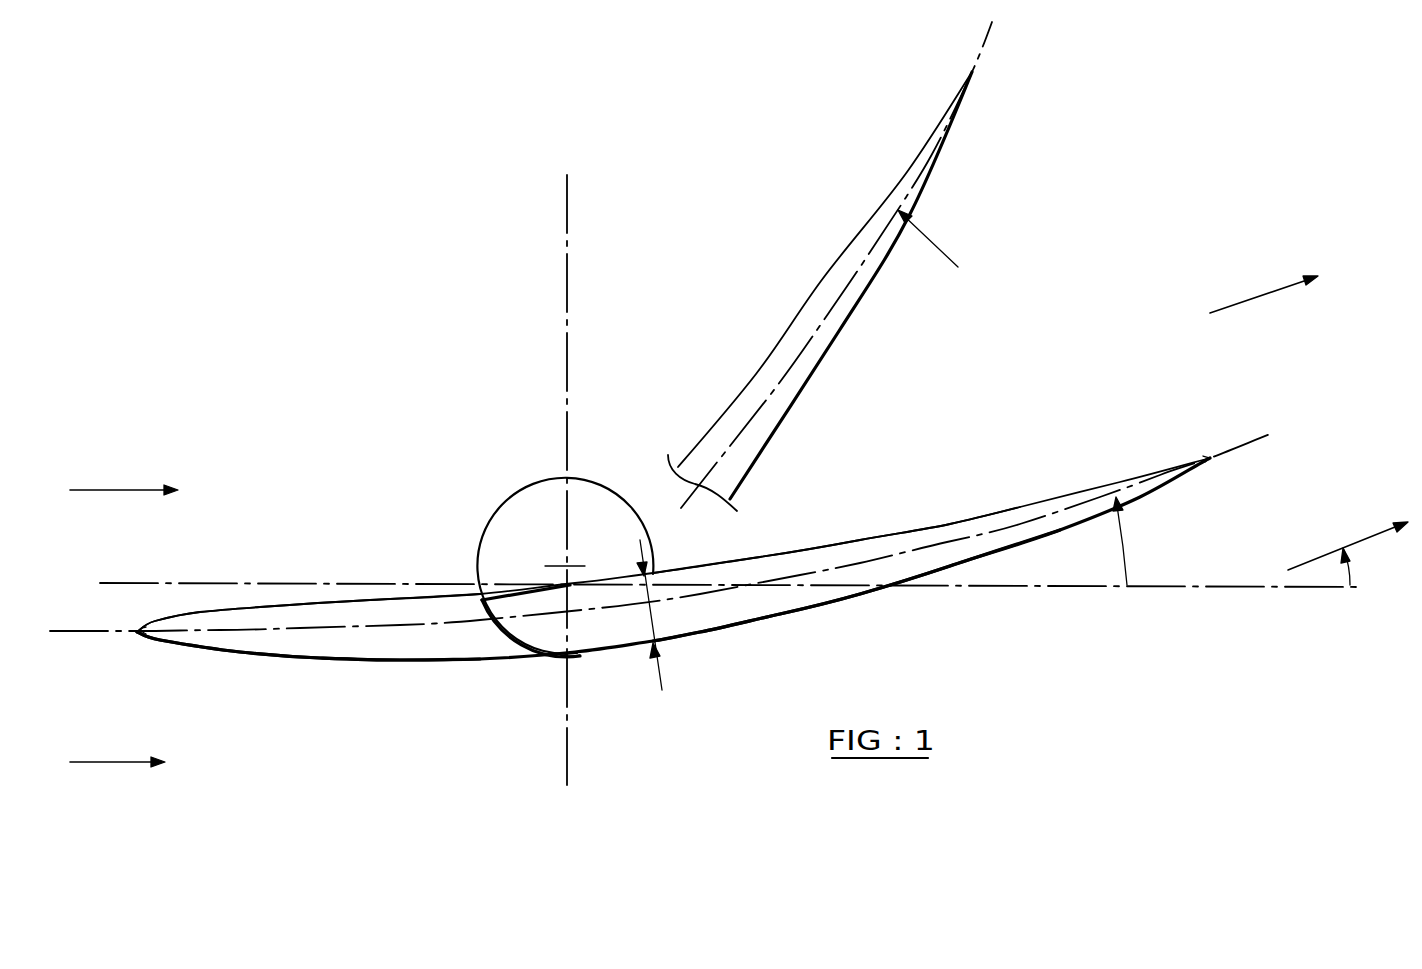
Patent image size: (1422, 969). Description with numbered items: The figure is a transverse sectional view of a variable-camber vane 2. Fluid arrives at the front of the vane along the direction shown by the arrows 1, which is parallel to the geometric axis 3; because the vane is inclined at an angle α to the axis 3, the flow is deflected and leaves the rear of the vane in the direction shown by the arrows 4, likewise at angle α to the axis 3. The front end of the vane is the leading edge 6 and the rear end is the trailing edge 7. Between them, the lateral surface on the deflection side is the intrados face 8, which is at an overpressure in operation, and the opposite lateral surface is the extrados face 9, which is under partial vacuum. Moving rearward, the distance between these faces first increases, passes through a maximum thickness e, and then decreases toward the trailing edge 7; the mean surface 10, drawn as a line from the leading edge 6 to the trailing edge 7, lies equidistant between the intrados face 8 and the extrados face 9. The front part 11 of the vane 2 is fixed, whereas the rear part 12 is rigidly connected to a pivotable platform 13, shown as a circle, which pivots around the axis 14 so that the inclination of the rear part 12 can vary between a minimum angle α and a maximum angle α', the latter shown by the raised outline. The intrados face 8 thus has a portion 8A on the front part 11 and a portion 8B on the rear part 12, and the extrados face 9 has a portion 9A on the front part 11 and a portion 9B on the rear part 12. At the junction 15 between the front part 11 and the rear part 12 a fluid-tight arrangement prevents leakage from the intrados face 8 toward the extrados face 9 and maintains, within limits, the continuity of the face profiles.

The arrows indicating incident fluid flow direction 1 is at (135, 490).
The vane 2 is at (661, 408).
The geometric axis 3 is at (1040, 588).
The arrows indicating deflected fluid flow direction 4 is at (1266, 298).
The leading edge 6 is at (137, 633).
The trailing edge 7 is at (1210, 455).
The intrados face 8 is at (420, 562).
The front portion of intrados face 8A is at (289, 606).
The rear portion of intrados face 8B is at (857, 541).
The extrados face 9 is at (473, 695).
The front portion of extrados face 9A is at (280, 659).
The rear portion of extrados face 9B is at (845, 598).
The mean surface 10 is at (947, 542).
The front part of the vane 11 is at (329, 659).
The rear part of the vane 12 is at (932, 538).
The pivotable platform 13 is at (522, 486).
The pivot axis 14 is at (565, 565).
The junction 15 is at (578, 673).